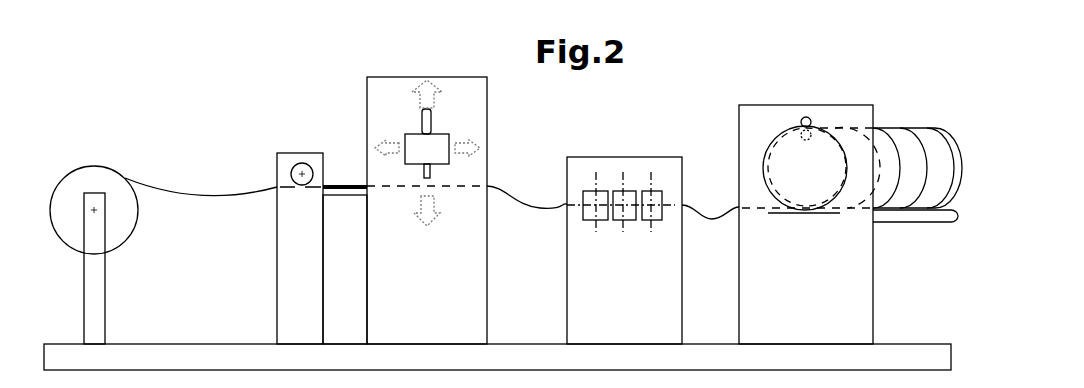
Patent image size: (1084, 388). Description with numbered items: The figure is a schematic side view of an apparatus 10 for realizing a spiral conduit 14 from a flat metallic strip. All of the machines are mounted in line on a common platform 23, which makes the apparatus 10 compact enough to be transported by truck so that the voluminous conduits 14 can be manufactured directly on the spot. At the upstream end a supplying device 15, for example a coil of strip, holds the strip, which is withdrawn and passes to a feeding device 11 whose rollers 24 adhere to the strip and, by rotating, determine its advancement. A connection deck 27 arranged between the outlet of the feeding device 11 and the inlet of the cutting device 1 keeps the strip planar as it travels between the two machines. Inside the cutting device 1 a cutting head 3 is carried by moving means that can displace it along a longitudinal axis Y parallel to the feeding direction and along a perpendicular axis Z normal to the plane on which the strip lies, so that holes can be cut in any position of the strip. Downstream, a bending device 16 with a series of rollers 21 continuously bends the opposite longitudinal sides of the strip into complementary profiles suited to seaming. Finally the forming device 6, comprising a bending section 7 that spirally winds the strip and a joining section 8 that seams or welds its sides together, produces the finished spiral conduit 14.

The cutting device 1 is at (424, 178).
The cutting head 3 is at (432, 150).
The forming device 6 is at (809, 174).
The bending section 7 is at (781, 132).
The joining section 8 is at (803, 118).
The apparatus 10 is at (247, 100).
The feeding device 11 is at (302, 193).
The spiral conduit 14 is at (905, 145).
The supplying device 15 is at (104, 183).
The bending device 16 is at (632, 199).
The rollers 21 is at (650, 192).
The platform 23 is at (145, 360).
The rollers 24 is at (305, 184).
The connection deck 27 is at (354, 197).
The longitudinal axis Y is at (392, 147).
The perpendicular axis Z is at (425, 95).